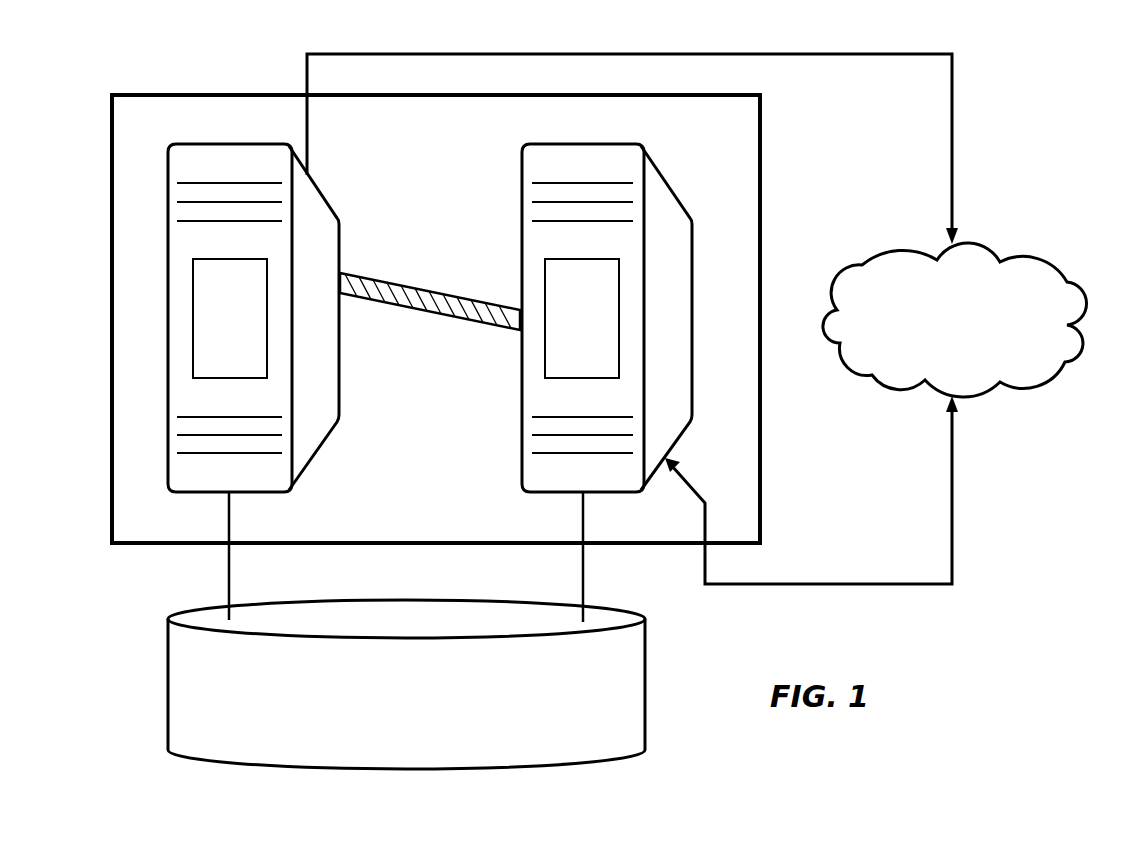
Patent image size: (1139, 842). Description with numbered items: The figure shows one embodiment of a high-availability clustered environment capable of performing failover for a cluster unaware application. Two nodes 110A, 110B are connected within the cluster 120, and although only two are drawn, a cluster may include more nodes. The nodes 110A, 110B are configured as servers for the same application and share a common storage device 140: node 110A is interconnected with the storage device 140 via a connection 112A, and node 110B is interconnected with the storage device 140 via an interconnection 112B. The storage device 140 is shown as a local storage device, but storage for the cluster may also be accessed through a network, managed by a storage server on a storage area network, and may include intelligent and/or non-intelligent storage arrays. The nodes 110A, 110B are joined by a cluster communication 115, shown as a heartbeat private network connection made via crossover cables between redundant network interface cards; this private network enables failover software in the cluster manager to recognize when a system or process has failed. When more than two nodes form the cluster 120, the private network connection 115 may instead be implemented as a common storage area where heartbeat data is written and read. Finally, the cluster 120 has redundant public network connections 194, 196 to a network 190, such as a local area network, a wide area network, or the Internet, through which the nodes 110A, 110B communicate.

The node 110A is at (325, 197).
The node 110B is at (665, 182).
The connection 112A is at (231, 573).
The interconnection 112B is at (585, 575).
The cluster communication 115 is at (410, 285).
The cluster 120 is at (760, 179).
The storage device 140 is at (406, 684).
The network 190 is at (955, 320).
The connection 194 is at (636, 54).
The connection 196 is at (813, 584).